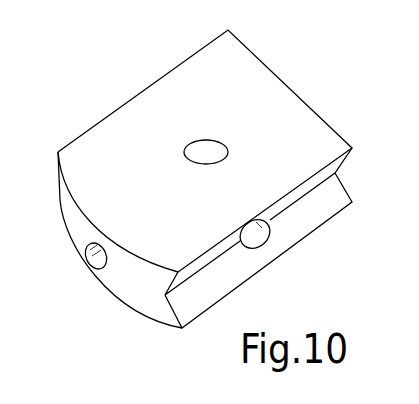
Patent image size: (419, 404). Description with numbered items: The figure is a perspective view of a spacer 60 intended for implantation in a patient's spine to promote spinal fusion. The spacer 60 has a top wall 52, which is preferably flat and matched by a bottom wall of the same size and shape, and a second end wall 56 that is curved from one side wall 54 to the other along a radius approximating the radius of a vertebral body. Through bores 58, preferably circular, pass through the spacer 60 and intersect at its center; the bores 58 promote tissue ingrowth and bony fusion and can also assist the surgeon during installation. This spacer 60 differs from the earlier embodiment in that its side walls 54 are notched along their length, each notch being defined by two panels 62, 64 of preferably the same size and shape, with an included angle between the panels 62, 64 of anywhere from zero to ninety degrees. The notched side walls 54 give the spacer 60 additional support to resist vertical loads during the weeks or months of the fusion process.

The top wall 52 is at (302, 118).
The side wall 54 is at (30, 210).
The second end wall 56 is at (137, 290).
The through bore 58 is at (88, 263).
The spacer 60 is at (302, 59).
The panel 62 is at (211, 252).
The panel 64 is at (242, 265).